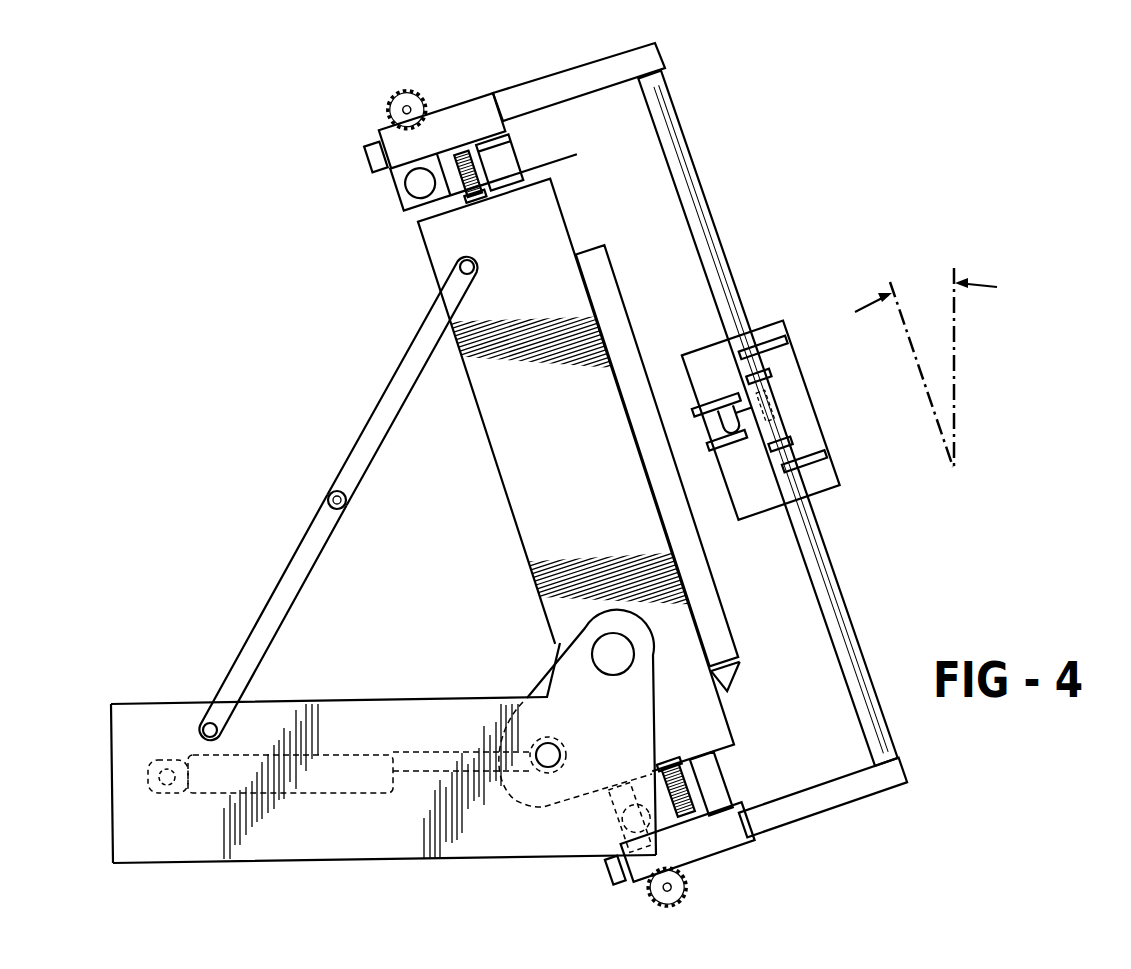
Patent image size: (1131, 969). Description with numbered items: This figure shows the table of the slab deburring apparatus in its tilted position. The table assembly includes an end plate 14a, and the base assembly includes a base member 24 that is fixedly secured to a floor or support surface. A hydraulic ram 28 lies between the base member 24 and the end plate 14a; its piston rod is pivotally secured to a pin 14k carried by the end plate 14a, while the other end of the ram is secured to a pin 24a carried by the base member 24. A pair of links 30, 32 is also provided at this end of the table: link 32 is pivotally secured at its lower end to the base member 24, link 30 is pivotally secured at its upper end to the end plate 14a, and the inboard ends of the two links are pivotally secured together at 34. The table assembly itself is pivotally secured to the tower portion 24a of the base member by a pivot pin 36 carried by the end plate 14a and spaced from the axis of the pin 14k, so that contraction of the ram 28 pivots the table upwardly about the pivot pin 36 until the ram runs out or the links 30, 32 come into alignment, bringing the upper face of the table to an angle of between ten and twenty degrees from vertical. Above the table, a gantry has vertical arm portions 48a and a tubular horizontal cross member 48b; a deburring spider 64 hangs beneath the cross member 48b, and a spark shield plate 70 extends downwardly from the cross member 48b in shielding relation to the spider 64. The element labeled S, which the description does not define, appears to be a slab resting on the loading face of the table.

The end plate 14a is at (596, 434).
The pin 14k is at (548, 767).
The base member 24 is at (345, 847).
The pin (tower portion of base member) 24a is at (630, 628).
The hydraulic ram 28 is at (377, 752).
The link 30 is at (390, 393).
The link 32 is at (274, 606).
The link pivot 34 is at (333, 493).
The pivot pin 36 is at (605, 648).
The vertical arm portion 48a is at (805, 807).
The tubular horizontal cross member 48b is at (820, 570).
The deburring spider 64 is at (732, 448).
The plate 70 is at (793, 327).
The substrate S is at (607, 250).